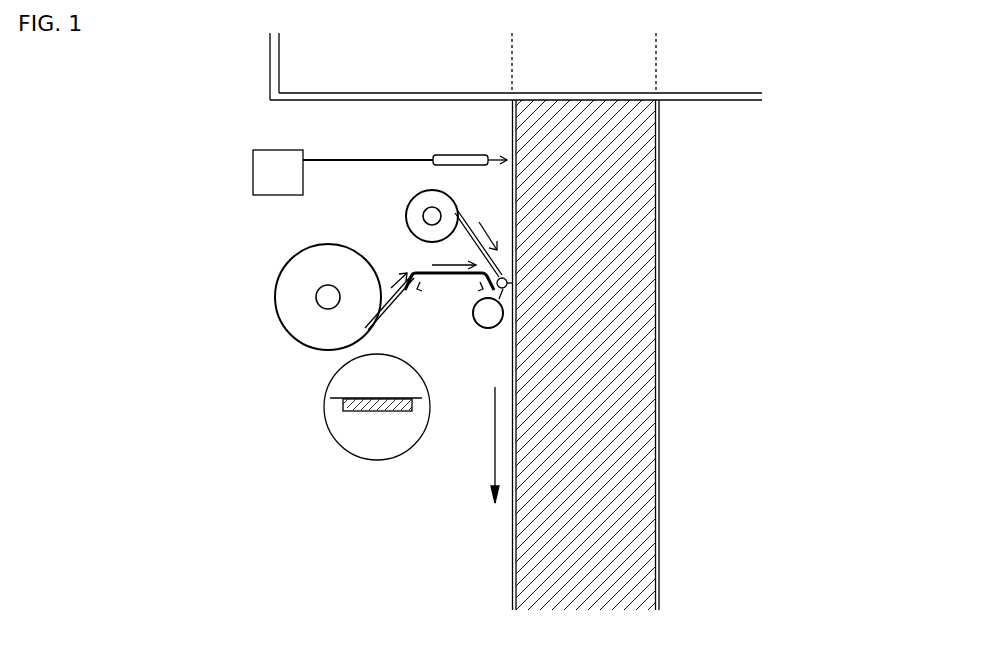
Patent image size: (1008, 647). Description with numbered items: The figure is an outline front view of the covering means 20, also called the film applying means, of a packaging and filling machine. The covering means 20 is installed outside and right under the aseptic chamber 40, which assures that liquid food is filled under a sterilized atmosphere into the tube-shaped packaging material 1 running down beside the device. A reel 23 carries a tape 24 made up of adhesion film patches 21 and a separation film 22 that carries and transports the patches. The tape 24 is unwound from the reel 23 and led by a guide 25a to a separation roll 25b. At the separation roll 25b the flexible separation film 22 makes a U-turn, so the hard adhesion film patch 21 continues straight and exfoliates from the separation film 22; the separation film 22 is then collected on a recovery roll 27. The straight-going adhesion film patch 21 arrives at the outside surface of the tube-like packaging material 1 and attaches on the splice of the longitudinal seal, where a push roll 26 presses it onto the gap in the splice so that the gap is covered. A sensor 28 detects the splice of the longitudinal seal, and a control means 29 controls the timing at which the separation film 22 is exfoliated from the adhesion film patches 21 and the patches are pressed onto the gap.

The tube-shaped packaging material 1 is at (660, 197).
The aseptic chamber 40 is at (516, 66).
The control means 29 is at (274, 149).
The sensor 28 is at (446, 153).
The recovery roll 27 is at (405, 213).
The covering means 20 is at (262, 262).
The reel 23 is at (277, 312).
The tape 24 is at (405, 292).
The guide 25a is at (452, 277).
The separation roll 25b is at (508, 282).
The push roll 26 is at (478, 327).
The separation film 22 is at (340, 400).
The adhesion film patch 21 is at (343, 410).